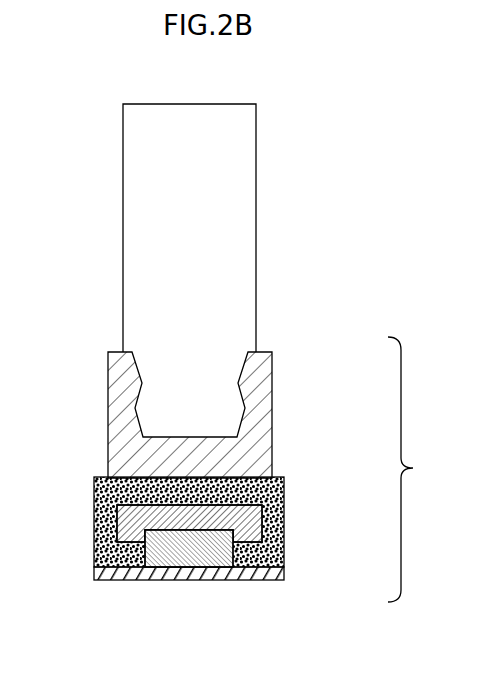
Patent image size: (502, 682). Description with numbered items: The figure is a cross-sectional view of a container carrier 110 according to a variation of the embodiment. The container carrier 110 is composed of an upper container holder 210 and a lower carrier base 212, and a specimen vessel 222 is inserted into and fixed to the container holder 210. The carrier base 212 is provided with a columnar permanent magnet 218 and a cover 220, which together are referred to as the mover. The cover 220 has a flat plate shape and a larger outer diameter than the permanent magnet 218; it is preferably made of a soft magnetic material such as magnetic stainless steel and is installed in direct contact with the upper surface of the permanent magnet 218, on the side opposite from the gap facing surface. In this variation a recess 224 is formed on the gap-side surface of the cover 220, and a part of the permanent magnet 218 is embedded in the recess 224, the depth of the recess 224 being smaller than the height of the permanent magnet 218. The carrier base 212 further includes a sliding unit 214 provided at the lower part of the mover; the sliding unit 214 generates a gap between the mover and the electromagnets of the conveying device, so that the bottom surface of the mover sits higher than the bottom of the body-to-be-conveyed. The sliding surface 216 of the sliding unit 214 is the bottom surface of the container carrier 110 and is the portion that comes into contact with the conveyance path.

The container carrier 110 is at (463, 478).
The container holder 210 is at (272, 398).
The carrier base 212 is at (287, 485).
The sliding unit 214 is at (284, 575).
The sliding surface 216 is at (232, 580).
The permanent magnet 218 is at (233, 556).
The cover 220 is at (262, 514).
The specimen vessel 222 is at (256, 214).
The recess 224 is at (118, 550).